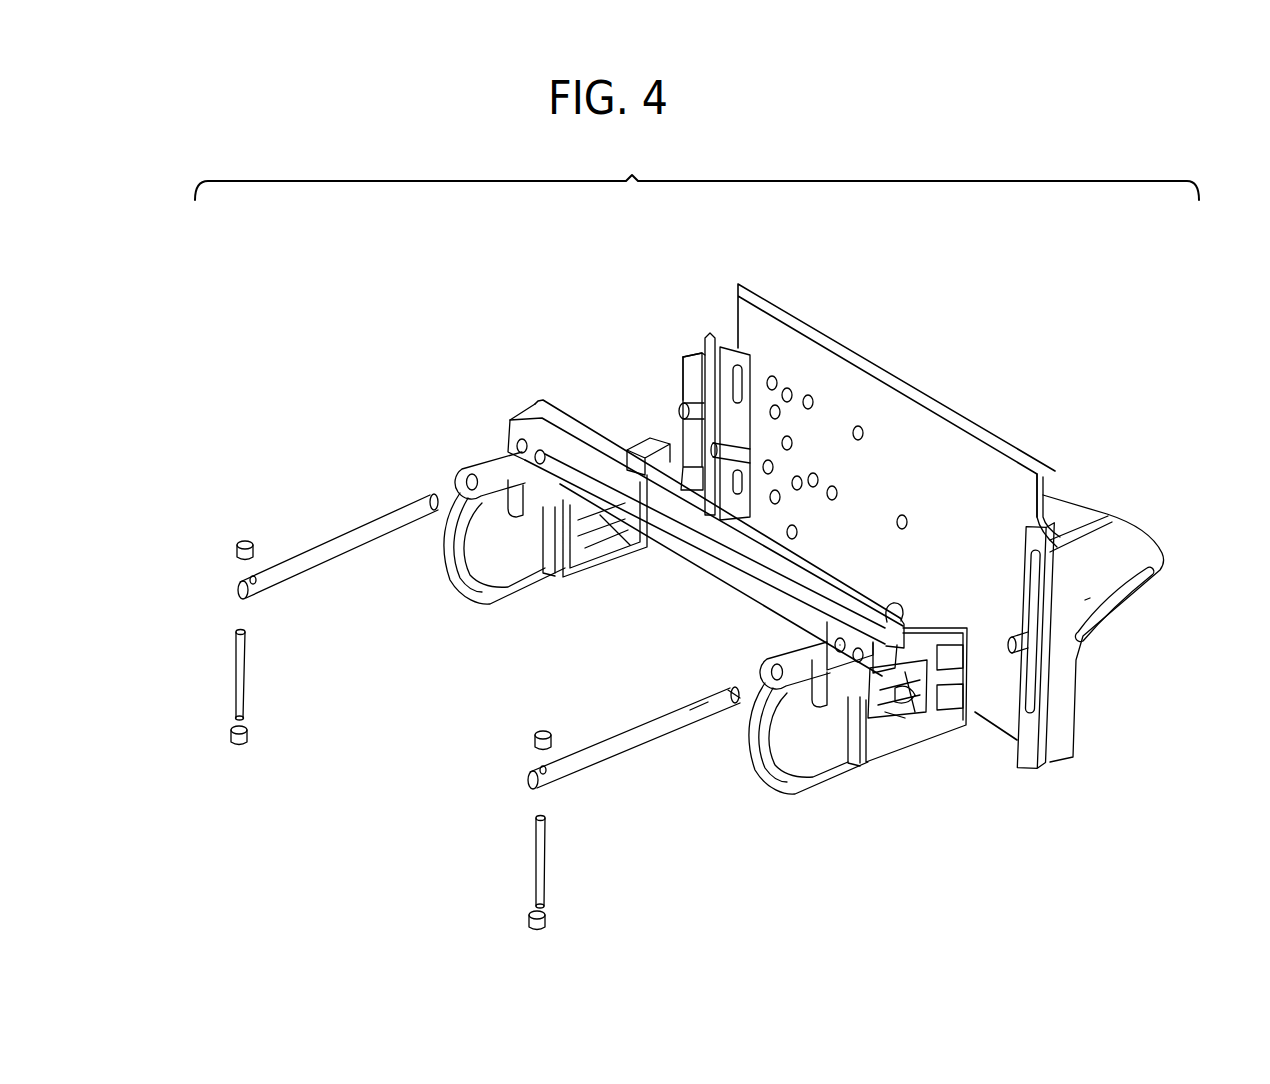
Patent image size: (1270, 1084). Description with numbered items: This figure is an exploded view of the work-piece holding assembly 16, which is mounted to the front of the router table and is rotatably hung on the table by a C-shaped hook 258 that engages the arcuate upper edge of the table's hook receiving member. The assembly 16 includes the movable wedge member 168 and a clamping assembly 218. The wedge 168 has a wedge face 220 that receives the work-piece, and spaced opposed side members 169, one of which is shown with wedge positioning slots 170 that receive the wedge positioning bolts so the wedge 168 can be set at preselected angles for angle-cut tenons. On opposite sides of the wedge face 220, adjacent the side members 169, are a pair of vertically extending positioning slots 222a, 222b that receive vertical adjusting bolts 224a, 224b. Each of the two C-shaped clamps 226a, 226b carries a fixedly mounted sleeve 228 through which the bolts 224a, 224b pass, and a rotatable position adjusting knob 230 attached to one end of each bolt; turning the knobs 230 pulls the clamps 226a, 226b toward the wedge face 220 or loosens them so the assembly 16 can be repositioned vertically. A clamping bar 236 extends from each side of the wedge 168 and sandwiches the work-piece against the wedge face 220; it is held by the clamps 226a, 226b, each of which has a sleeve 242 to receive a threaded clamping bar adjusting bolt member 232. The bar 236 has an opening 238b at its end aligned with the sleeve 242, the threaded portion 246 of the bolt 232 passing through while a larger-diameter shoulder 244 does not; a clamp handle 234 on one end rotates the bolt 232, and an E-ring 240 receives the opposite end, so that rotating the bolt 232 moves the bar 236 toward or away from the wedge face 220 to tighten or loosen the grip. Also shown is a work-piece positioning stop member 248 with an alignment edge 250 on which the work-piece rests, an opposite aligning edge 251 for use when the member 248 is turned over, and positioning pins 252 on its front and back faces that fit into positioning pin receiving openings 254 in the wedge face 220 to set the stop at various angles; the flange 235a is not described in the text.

The work-piece holding assembly 16 is at (1005, 336).
The movable wedge work-piece holding member 168 is at (1146, 627).
The side members 169 is at (1111, 588).
The wedge positioning slots 170 is at (1133, 599).
The clamping assembly 218 is at (436, 708).
The wedge face 220 is at (896, 505).
The vertically extending positioning slot 222a is at (1098, 522).
The vertically extending positioning slot 222b is at (697, 362).
The vertical adjusting bolt 224a is at (1008, 753).
The vertical adjusting bolt 224b is at (685, 412).
The C-shaped clamp 226a is at (748, 742).
The C-shaped clamp 226b is at (507, 602).
The sleeve 228 is at (952, 724).
The rotatable position adjusting knob 230 is at (898, 700).
The threaded clamping bar adjusting bolt member 232 is at (345, 536).
The clamp handle 234 is at (248, 680).
The channel flange 235a is at (812, 625).
The clamping bar 236 is at (750, 553).
The opening 238b is at (503, 437).
The E-ring 240 is at (900, 609).
The sleeve 242 is at (766, 658).
The shoulder 244 is at (703, 717).
The threaded portion 246 is at (738, 700).
The work-piece positioning stop member 248 is at (700, 354).
The alignment edge 250 is at (714, 335).
The aligning edge 251 is at (683, 360).
The positioning pins 252 is at (679, 412).
The positioning pin receiving openings 254 is at (775, 381).
The C-shaped hook 258 is at (1048, 478).